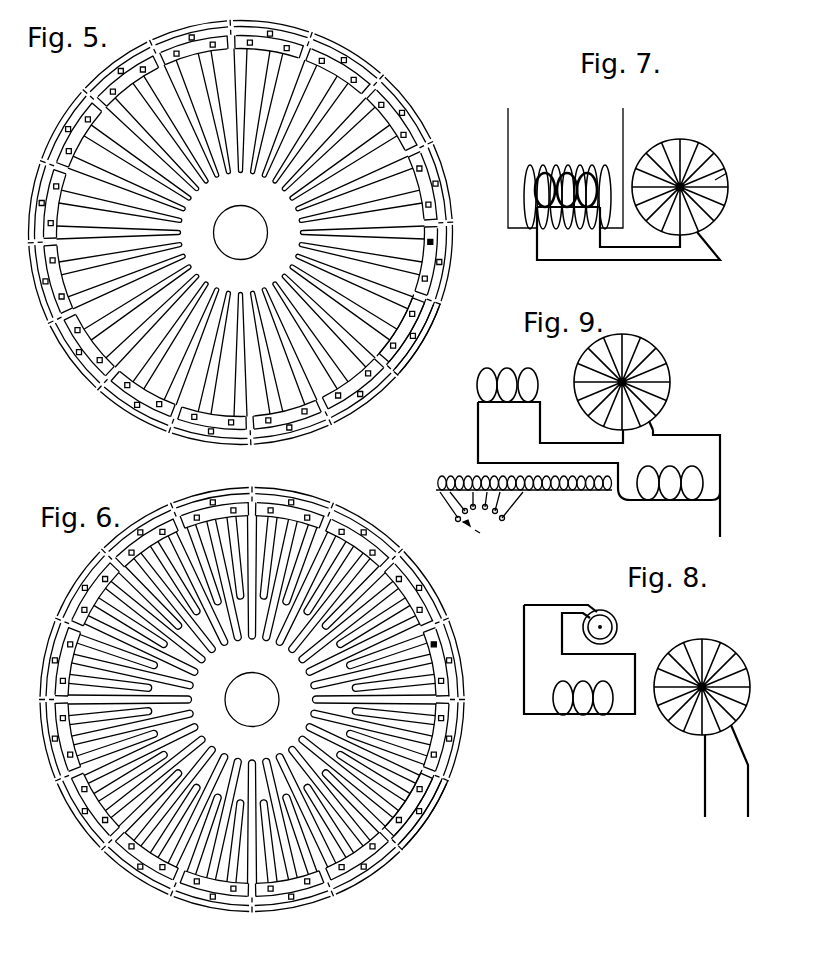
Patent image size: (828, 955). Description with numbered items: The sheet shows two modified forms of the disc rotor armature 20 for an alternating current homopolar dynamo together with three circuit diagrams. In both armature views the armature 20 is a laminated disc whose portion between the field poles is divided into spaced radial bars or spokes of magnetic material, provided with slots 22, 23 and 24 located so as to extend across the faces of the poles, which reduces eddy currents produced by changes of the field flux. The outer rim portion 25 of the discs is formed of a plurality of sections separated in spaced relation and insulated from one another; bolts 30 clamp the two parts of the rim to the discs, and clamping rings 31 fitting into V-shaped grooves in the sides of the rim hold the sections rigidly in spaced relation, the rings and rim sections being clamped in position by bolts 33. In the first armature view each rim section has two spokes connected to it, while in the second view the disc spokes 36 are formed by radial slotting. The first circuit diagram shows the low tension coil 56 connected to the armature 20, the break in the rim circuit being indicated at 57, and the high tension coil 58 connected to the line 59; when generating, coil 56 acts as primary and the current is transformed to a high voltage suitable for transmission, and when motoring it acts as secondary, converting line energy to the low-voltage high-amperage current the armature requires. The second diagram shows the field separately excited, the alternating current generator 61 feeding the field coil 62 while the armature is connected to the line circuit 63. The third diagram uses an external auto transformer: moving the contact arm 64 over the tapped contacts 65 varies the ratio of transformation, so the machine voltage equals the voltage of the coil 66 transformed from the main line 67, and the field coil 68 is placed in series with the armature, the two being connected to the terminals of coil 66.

In FIG. 7, the armature 20 is at (727, 173).
In FIG. 5, the slot 22 is at (390, 128).
In FIG. 6, the slot 23 is at (407, 615).
In FIG. 6, the slot 24 is at (399, 597).
In FIG. 6, the outer rim portion 25 is at (436, 728).
In FIG. 5, the bolt 30 is at (437, 246).
In FIG. 6, the bolt 30 is at (434, 640).
In FIG. 5, the clamping ring 31 is at (400, 362).
In FIG. 6, the clamping ring 31 is at (406, 830).
In FIG. 5, the bolt 33 is at (420, 343).
In FIG. 6, the bolt 33 is at (429, 812).
In FIG. 6, the disc spoke 36 is at (419, 738).
In FIG. 7, the low tension coil 56 is at (540, 187).
In FIG. 7, the break in the rim circuit 57 is at (678, 137).
In FIG. 7, the high tension coil 58 is at (570, 173).
In FIG. 7, the line 59 is at (623, 118).
In FIG. 8, the alternating current generator 61 is at (617, 620).
In FIG. 8, the field coil 62 is at (590, 716).
In FIG. 8, the line circuit 63 is at (748, 786).
In FIG. 9, the contact arm 64 is at (463, 522).
In FIG. 9, the tapped contacts 65 is at (505, 518).
In FIG. 9, the coil 66 is at (670, 472).
In FIG. 9, the main line 67 is at (723, 533).
In FIG. 9, the field coil 68 is at (507, 370).